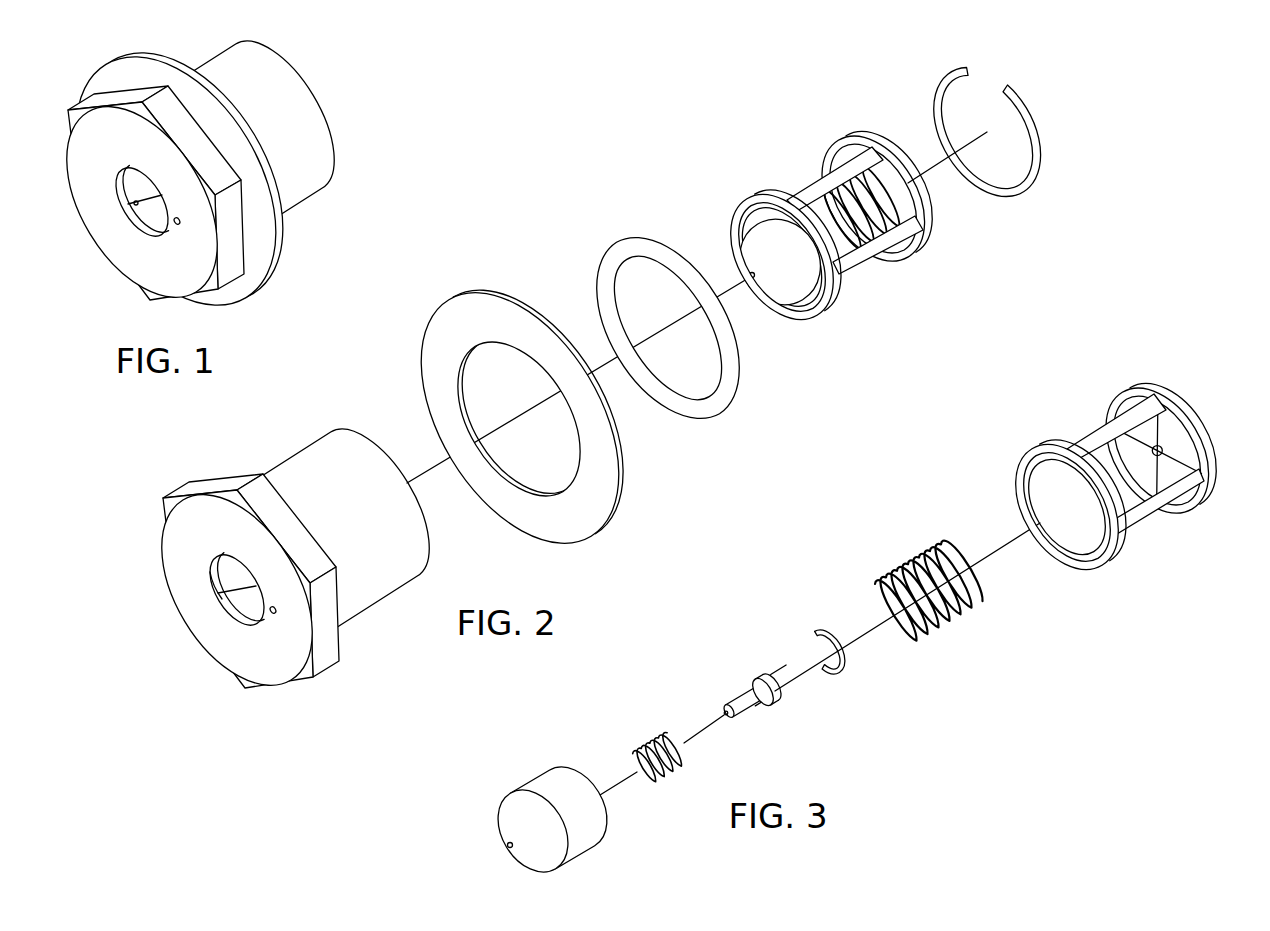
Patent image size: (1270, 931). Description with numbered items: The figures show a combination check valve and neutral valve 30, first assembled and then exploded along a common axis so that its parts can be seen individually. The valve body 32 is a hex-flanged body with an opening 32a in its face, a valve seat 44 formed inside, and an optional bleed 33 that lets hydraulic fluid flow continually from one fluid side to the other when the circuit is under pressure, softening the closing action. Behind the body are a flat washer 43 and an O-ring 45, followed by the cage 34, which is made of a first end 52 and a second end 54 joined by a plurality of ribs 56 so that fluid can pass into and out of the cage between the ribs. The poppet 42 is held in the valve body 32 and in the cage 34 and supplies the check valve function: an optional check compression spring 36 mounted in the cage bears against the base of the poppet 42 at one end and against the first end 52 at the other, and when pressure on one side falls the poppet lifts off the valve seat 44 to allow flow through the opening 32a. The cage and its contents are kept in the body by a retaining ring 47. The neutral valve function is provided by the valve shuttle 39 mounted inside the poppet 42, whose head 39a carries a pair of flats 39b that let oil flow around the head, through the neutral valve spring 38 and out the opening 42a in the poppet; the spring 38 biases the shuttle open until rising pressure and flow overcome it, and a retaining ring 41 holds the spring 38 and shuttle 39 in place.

In FIG. 1, the combination check valve and neutral valve 30 is at (232, 179).
In FIG. 1, the valve body 32 is at (183, 179).
In FIG. 2, the valve body 32 is at (263, 570).
In FIG. 2, the opening 32a is at (221, 599).
In FIG. 1, the bleed 33 is at (178, 224).
In FIG. 2, the bleed 33 is at (274, 614).
In FIG. 2, the cage 34 is at (828, 207).
In FIG. 3, the cage 34 is at (1114, 455).
In FIG. 2, the check compression spring 36 is at (847, 190).
In FIG. 3, the check compression spring 36 is at (951, 617).
In FIG. 3, the neutral valve spring 38 is at (652, 746).
In FIG. 3, the valve shuttle 39 is at (763, 683).
In FIG. 3, the head 39a is at (778, 699).
In FIG. 3, the flats 39b is at (761, 678).
In FIG. 3, the retaining ring 41 is at (815, 635).
In FIG. 1, the poppet 42 is at (132, 187).
In FIG. 2, the poppet 42 is at (766, 274).
In FIG. 3, the poppet 42 is at (521, 826).
In FIG. 1, the opening 42a is at (135, 204).
In FIG. 3, the opening 42a is at (506, 846).
In FIG. 1, the washer 43 is at (250, 287).
In FIG. 2, the washer 43 is at (552, 525).
In FIG. 2, the valve seat 44 is at (230, 612).
In FIG. 2, the O-ring seal 45 is at (726, 410).
In FIG. 2, the retaining ring 47 is at (1017, 197).
In FIG. 2, the first end 52 is at (872, 138).
In FIG. 3, the first end 52 is at (1157, 388).
In FIG. 2, the second end 54 is at (775, 198).
In FIG. 3, the second end 54 is at (1060, 443).
In FIG. 2, the ribs 56 is at (867, 260).
In FIG. 3, the ribs 56 is at (1150, 510).